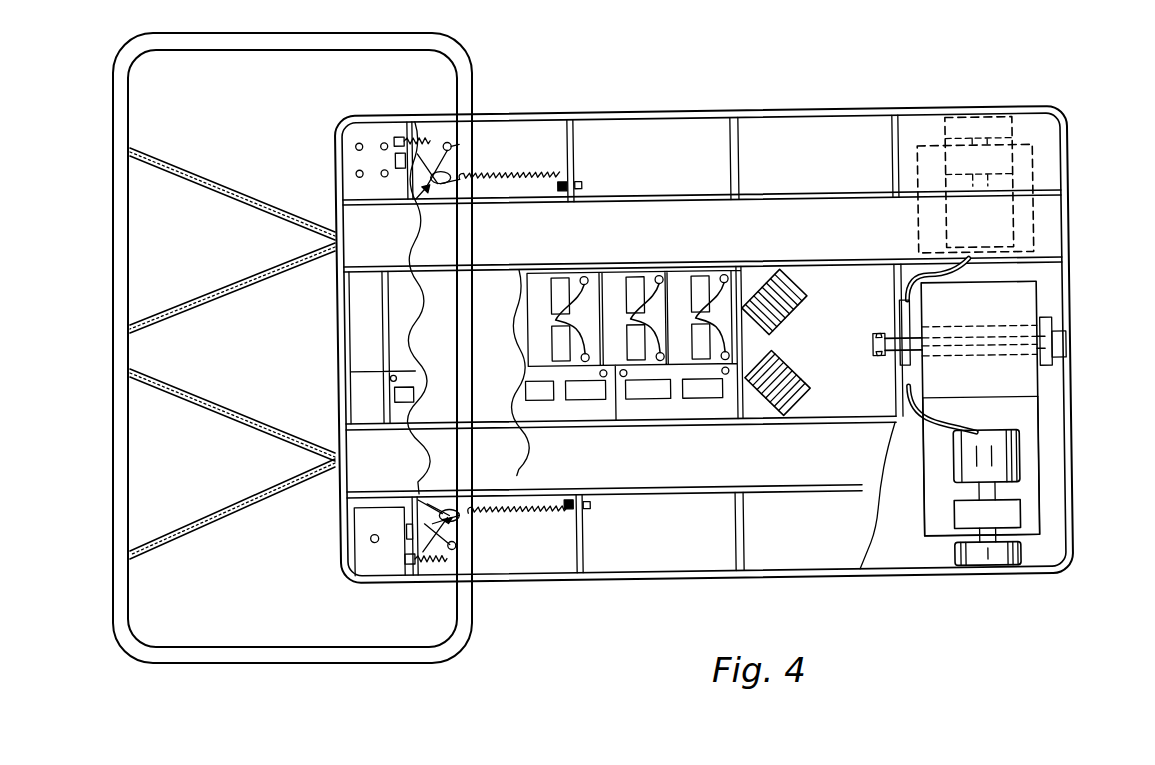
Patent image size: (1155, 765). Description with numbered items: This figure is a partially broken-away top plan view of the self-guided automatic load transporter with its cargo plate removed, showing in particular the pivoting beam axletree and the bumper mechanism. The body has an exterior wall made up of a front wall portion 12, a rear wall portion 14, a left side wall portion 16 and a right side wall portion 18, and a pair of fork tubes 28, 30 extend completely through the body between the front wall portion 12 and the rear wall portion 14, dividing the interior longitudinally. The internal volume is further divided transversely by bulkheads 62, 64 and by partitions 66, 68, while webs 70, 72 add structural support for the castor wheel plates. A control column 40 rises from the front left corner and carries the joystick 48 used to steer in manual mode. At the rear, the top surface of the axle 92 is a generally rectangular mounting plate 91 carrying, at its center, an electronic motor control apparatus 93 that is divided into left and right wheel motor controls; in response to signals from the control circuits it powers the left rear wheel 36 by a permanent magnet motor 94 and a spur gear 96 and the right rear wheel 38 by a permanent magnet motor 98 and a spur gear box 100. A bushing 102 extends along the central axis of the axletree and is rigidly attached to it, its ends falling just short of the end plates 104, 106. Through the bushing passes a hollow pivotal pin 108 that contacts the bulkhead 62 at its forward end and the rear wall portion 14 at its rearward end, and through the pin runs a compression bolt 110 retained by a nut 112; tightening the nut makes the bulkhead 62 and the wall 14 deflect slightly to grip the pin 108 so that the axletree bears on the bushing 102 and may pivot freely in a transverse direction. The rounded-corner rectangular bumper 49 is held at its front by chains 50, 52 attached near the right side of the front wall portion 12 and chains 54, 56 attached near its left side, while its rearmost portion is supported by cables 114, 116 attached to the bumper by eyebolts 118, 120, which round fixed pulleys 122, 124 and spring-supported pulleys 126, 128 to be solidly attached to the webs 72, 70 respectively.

The front wall portion 12 is at (338, 338).
The rear wall portion 14 is at (1068, 270).
The left side wall portion 16 is at (675, 580).
The right side wall portion 18 is at (658, 111).
The fork tube 28 is at (768, 244).
The fork tube 30 is at (764, 467).
The fixed rotation wheel 36 is at (976, 568).
The fixed rotation wheel 38 is at (990, 118).
The control column 40 is at (370, 573).
The joystick 48 is at (366, 537).
The bumper 49 is at (478, 650).
The chain 50 is at (255, 192).
The chain 52 is at (205, 284).
The chain 54 is at (212, 397).
The chain 56 is at (245, 494).
The bulkhead 62 is at (897, 124).
The bulkhead 64 is at (736, 125).
The partition 66 is at (570, 125).
The partition 68 is at (578, 572).
The web 70 is at (417, 122).
The web 72 is at (418, 572).
The mounting plate 91 is at (1040, 428).
The axle 92 is at (1052, 412).
The electronic motor control apparatus 93 is at (1045, 302).
The permanent magnet motor 94 is at (1020, 460).
The spur gear 96 is at (1020, 518).
The permanent magnet motor 98 is at (940, 226).
The spur gear box 100 is at (1040, 156).
The bushing 102 is at (1035, 322).
The end plate 104 is at (905, 313).
The end plate 106 is at (1062, 322).
The pivotal pin 108 is at (1062, 365).
The compression bolt 110 is at (898, 347).
The nut 112 is at (875, 339).
The cable 114 is at (440, 495).
The cable 116 is at (415, 178).
The eyebolt 118 is at (456, 541).
The eyebolt 120 is at (468, 144).
The fixed pulley 122 is at (412, 486).
The fixed pulley 124 is at (413, 195).
The spring-supported pulley 126 is at (462, 500).
The spring-supported pulley 128 is at (462, 196).